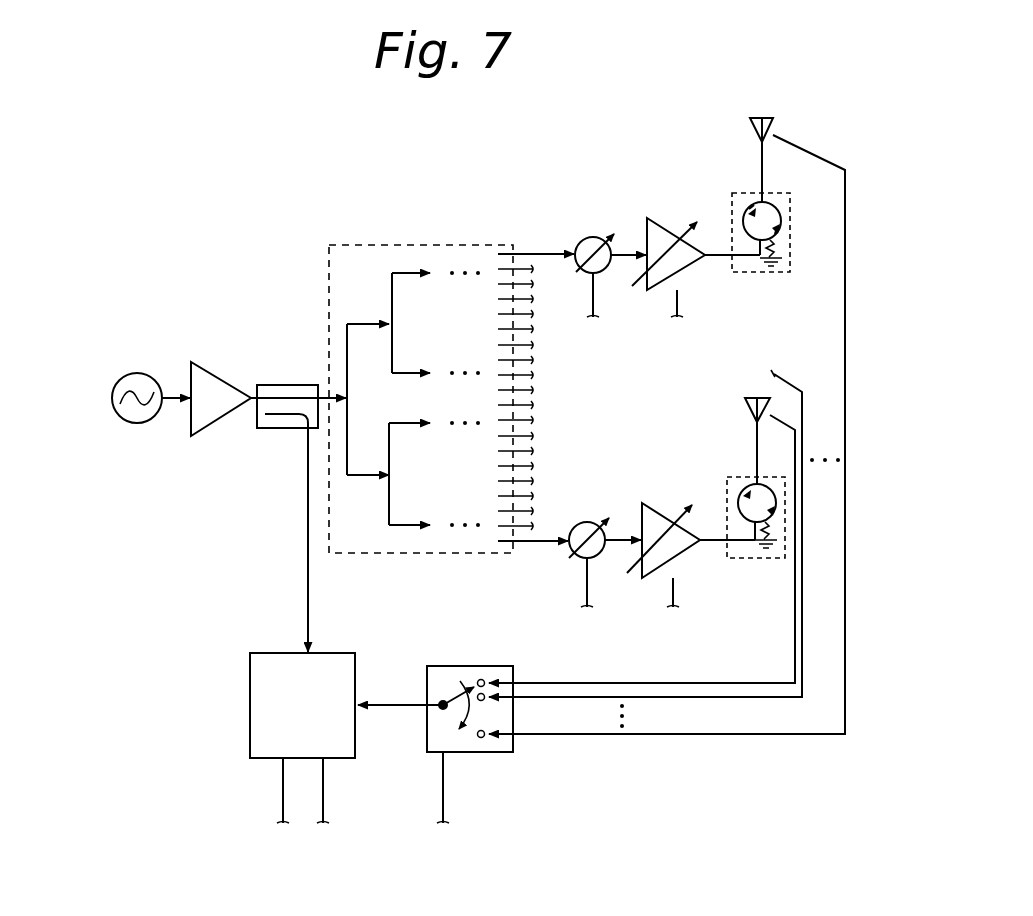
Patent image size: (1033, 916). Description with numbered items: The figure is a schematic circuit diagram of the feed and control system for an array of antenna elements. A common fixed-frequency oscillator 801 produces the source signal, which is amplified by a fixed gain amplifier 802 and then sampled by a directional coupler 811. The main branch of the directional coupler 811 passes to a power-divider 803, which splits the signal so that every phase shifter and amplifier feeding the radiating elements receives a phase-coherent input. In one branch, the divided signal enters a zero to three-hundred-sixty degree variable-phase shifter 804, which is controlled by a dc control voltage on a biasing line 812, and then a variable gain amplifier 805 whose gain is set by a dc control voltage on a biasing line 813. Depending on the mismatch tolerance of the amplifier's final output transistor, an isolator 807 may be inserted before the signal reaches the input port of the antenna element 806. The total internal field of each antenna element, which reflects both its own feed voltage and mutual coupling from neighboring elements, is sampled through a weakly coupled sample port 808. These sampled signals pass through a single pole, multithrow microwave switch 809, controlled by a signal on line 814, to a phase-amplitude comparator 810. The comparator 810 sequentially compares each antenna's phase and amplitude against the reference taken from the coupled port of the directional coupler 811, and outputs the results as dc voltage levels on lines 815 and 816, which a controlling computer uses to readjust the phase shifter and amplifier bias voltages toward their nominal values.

The fixed-frequency oscillator 801 is at (138, 373).
The fixed gain amplifier 802 is at (189, 366).
The power-divider 803 is at (328, 277).
The variable-phase shifter 804 is at (573, 240).
The variable gain amplifier 805 is at (647, 218).
The antenna element 806 is at (750, 132).
The isolator 807 is at (732, 207).
The sample port 808 is at (787, 138).
The single pole, multithrow microwave switch 809 is at (425, 670).
The phase-amplitude comparator 810 is at (250, 667).
The directional coupler 811 is at (255, 385).
The biasing line 812 is at (595, 313).
The biasing line 813 is at (679, 313).
The control line 814 is at (443, 818).
The output line 815 is at (327, 812).
The output line 816 is at (283, 816).